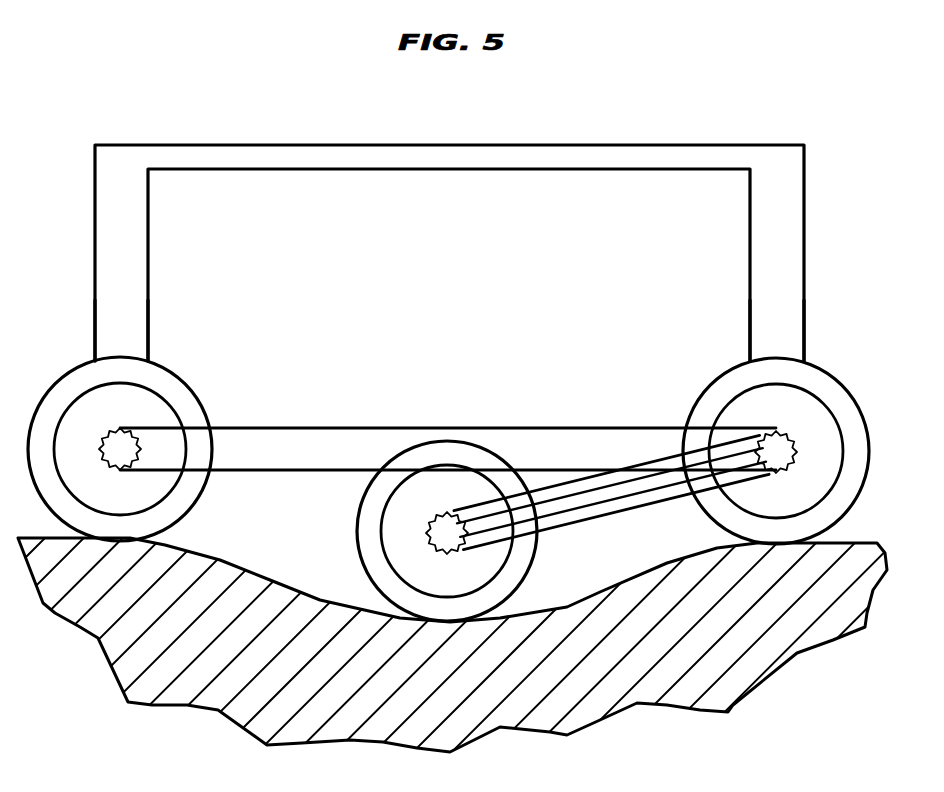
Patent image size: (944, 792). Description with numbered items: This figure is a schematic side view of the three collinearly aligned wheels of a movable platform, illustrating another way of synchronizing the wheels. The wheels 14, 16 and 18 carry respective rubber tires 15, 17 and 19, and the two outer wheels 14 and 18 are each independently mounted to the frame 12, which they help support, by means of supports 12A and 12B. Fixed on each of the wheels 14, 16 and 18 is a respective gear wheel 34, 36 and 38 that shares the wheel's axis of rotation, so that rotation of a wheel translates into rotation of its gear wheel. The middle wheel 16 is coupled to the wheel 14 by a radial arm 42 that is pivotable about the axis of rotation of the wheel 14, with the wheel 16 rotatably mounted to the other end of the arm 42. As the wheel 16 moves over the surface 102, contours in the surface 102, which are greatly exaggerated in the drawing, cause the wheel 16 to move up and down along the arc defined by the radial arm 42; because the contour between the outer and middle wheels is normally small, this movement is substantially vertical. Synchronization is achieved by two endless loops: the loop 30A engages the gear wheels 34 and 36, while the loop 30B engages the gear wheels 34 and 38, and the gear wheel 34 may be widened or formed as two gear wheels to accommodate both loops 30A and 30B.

The frame 12 is at (507, 153).
The support 12A is at (793, 243).
The support 12B is at (138, 238).
The wheel 14 is at (726, 413).
The rubber tire 15 is at (738, 378).
The wheel 16 is at (407, 580).
The rubber tire 17 is at (367, 500).
The wheel 18 is at (168, 410).
The rubber tire 19 is at (163, 372).
The endless loop 30A is at (611, 500).
The endless loop 30B is at (347, 427).
The gear wheel 34 is at (793, 440).
The gear wheel 36 is at (426, 537).
The gear wheel 38 is at (133, 456).
The radial arm 42 is at (598, 492).
The surface 102 is at (247, 572).